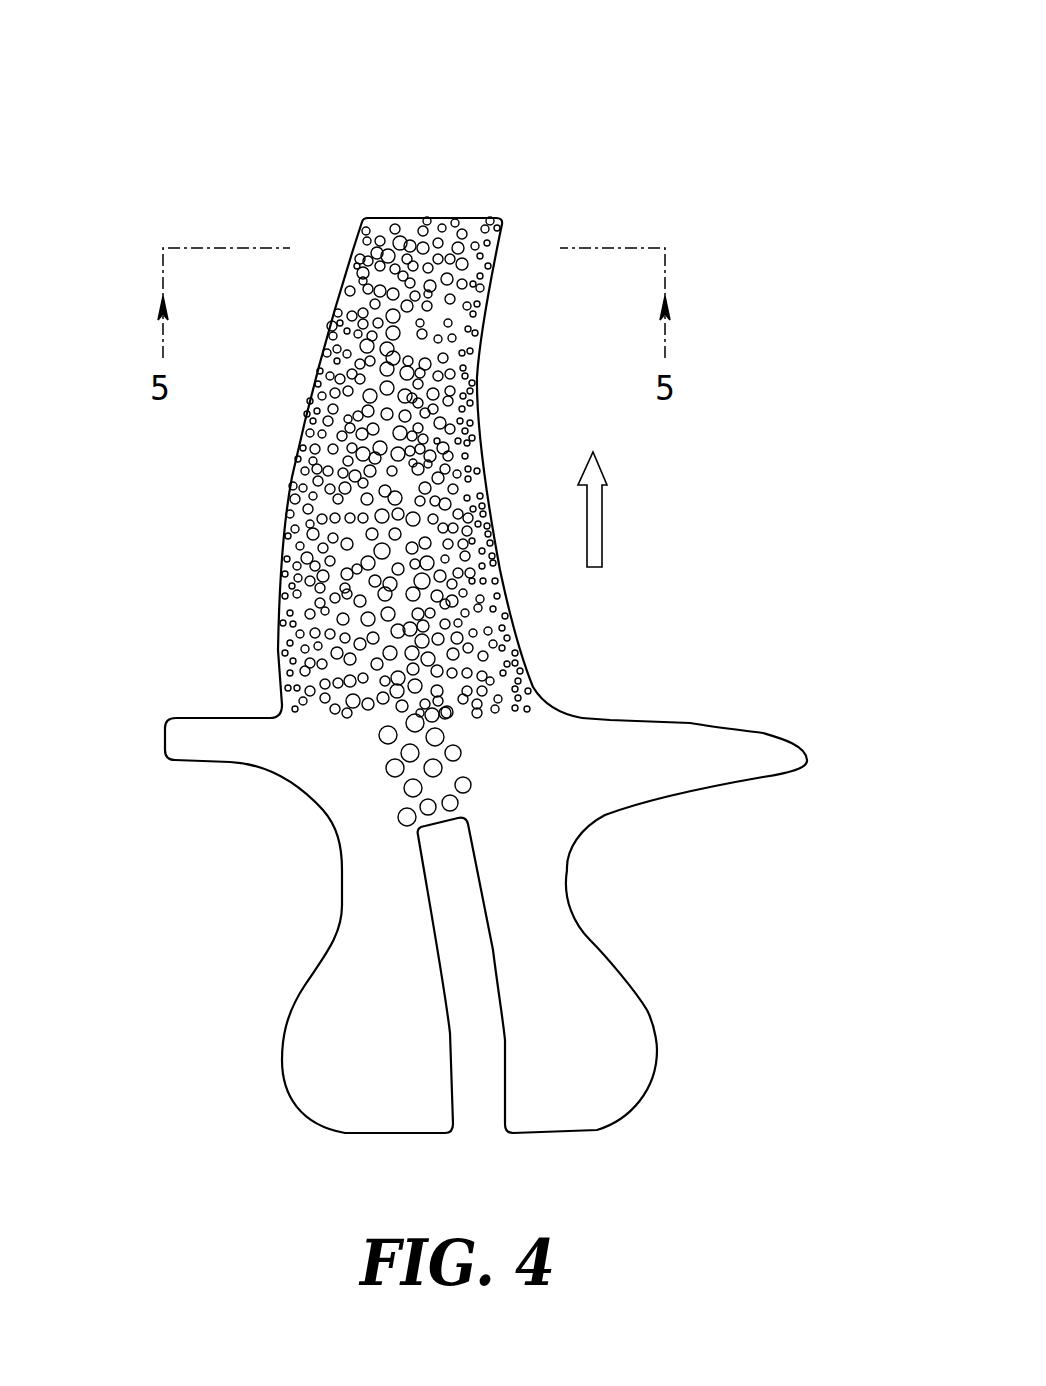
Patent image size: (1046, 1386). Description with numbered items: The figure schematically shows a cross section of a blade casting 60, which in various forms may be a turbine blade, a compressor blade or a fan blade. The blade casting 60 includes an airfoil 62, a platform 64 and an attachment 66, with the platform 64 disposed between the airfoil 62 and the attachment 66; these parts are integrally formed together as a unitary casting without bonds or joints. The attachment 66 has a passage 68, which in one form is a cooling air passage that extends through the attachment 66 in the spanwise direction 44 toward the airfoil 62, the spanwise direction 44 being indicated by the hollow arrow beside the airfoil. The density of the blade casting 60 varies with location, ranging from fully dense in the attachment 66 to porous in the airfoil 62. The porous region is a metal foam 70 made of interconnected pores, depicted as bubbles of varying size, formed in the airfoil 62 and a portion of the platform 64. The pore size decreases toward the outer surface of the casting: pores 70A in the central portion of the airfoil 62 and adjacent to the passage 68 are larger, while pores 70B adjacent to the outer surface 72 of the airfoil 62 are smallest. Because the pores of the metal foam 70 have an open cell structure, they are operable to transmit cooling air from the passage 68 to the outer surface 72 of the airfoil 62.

The spanwise direction 44 is at (615, 518).
The blade casting 60 is at (577, 90).
The airfoil 62 is at (445, 213).
The platform 64 is at (715, 727).
The attachment 66 is at (637, 997).
The passage 68 is at (503, 1059).
The metal foam 70 is at (515, 742).
The pores 70A is at (307, 497).
The pores 70B is at (322, 345).
The outer surface 72 is at (478, 375).